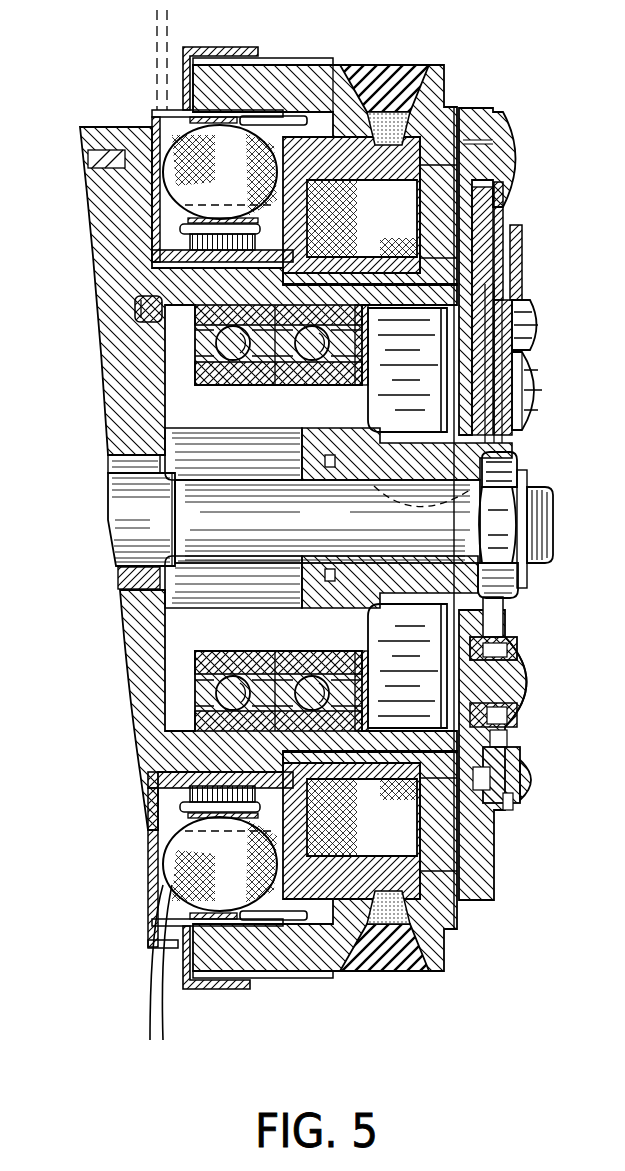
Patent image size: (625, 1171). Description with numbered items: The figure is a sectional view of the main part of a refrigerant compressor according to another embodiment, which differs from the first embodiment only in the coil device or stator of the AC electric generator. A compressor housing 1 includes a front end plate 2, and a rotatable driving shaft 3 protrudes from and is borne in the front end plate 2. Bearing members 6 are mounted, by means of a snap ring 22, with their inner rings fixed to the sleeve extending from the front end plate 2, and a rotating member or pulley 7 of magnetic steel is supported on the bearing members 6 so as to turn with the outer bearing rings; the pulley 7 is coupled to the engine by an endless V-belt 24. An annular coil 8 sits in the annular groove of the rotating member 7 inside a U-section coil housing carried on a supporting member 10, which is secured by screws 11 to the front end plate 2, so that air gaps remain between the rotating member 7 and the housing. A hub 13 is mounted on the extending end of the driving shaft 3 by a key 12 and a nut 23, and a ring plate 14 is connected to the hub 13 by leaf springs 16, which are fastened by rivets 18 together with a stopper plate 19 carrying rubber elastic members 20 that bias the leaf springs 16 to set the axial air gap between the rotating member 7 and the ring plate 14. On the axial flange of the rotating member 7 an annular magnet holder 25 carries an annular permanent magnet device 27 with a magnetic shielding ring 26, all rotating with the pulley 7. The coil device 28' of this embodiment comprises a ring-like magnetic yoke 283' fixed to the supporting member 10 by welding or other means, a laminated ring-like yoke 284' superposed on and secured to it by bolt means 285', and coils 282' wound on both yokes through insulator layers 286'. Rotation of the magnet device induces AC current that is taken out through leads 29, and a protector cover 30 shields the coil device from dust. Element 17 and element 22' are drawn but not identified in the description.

The compressor housing 1 is at (90, 160).
The front end plate 2 is at (111, 399).
The driving shaft 3 is at (503, 522).
The bearing members 6 is at (195, 690).
The rotating member 7 is at (439, 81).
The annular coil 8 is at (389, 846).
The supporting member 10 is at (155, 263).
The screws 11 is at (133, 313).
The key 12 is at (453, 522).
The hub 13 is at (464, 452).
The ring plate 14 is at (489, 109).
The leaf springs 16 is at (509, 221).
The lock nut 17 is at (518, 635).
The rivets 18 is at (538, 388).
The stopper plate 19 is at (522, 266).
The elastic members 20 is at (549, 321).
The snap ring 22 is at (401, 667).
The rotor cup 22' is at (401, 368).
The nut 23 is at (520, 535).
The endless V-belt 24 is at (393, 82).
The annular magnet holder 25 is at (298, 67).
The magnetic shielding ring 26 is at (323, 82).
The annular permanent magnet device 27 is at (270, 118).
The coil device 28' is at (160, 172).
The leads 29 is at (148, 977).
The protector cover 30 is at (212, 992).
The coils 282' is at (148, 217).
The ring like magnetic yoke 283' is at (265, 56).
The laminated ring like yoke 284' is at (168, 100).
The bolt means 285' is at (145, 249).
The insulator layers 286' is at (171, 180).